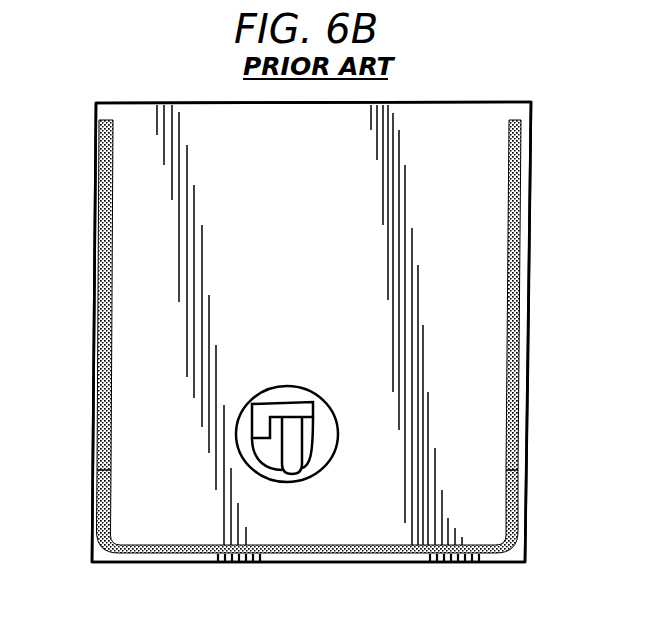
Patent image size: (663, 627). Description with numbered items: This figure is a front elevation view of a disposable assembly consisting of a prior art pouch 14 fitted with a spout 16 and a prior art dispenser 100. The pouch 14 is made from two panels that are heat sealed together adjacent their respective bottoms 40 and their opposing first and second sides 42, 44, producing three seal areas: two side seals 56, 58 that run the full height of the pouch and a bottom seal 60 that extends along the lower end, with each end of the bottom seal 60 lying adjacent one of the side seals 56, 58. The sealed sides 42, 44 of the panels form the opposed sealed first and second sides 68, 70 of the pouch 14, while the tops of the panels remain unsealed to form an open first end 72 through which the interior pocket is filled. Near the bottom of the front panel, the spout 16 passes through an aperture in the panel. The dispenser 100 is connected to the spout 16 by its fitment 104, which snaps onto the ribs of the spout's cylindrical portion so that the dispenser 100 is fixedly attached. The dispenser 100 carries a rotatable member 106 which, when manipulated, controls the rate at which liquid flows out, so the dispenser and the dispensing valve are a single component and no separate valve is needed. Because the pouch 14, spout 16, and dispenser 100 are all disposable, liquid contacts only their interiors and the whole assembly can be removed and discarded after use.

The pouch 14 is at (464, 95).
The spout 16 is at (334, 417).
The bottom 40 is at (375, 564).
The first side 42 is at (93, 420).
The second side 44 is at (527, 395).
The first side seal 56 is at (102, 226).
The second side seal 58 is at (510, 262).
The bottom seal 60 is at (193, 555).
The first sealed side of the pouch 68 is at (94, 308).
The second sealed side of the pouch 70 is at (528, 338).
The open first end 72 is at (423, 102).
The dispenser 100 is at (309, 395).
The fitment 104 is at (320, 433).
The rotatable member 106 is at (262, 405).